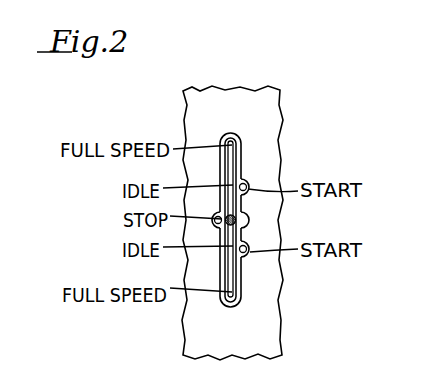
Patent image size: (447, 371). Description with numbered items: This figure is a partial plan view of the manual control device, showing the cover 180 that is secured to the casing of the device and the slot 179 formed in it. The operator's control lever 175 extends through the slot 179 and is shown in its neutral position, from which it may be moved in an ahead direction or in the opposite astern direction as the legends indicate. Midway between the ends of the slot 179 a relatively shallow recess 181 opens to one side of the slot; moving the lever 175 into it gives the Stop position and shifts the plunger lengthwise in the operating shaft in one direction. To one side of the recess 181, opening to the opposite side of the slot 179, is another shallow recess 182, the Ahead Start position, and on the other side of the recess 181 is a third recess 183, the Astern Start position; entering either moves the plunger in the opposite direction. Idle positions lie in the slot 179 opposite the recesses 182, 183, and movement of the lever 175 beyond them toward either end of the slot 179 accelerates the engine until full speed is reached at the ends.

The operator's control lever 175 is at (238, 220).
The slot 179 is at (232, 160).
The cover 180 is at (283, 325).
The recess 181 is at (212, 225).
The recess 182 is at (250, 190).
The recess 183 is at (252, 256).